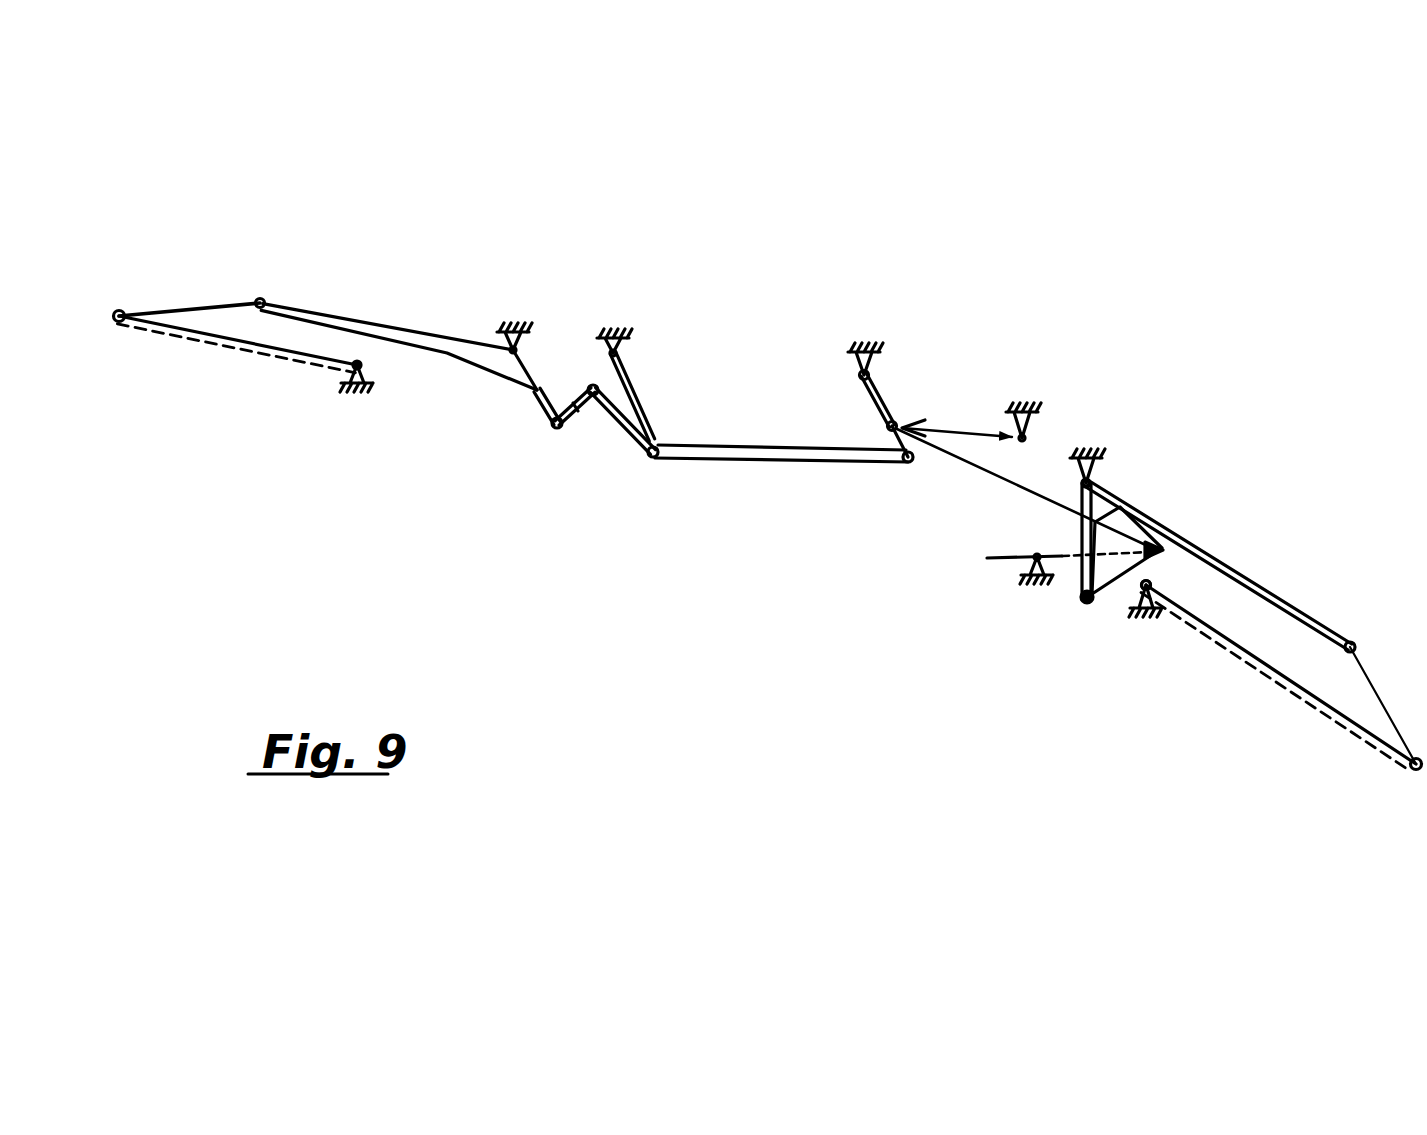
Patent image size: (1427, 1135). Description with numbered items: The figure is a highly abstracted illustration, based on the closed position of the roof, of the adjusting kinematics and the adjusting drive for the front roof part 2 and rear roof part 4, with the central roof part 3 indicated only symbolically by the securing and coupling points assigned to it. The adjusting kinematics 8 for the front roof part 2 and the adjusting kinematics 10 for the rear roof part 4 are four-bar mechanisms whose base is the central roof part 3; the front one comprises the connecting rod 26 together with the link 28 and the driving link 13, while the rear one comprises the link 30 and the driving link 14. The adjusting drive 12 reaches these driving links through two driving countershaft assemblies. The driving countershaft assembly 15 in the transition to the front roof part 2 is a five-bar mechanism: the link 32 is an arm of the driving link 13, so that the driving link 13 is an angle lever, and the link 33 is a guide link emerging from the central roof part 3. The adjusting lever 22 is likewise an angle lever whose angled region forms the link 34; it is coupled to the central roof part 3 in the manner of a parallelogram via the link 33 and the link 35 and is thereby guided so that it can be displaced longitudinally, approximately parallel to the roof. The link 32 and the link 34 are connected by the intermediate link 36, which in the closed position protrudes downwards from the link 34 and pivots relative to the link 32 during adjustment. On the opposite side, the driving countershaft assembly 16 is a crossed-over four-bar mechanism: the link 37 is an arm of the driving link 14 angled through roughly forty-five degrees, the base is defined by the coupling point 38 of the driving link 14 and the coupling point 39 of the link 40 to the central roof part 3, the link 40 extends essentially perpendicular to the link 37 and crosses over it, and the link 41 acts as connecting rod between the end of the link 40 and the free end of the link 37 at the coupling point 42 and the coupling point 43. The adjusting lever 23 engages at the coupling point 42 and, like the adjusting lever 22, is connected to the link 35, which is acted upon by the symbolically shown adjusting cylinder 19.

The front roof part 2 is at (170, 299).
The central roof part 3 is at (352, 390).
The rear roof part 4 is at (1426, 699).
The adjusting kinematics 8 is at (261, 388).
The adjusting kinematics 10 is at (1309, 582).
The adjusting drive 12 is at (781, 361).
The driving link 13 is at (331, 310).
The driving link 14 is at (1232, 572).
The driving countershaft assembly 15 is at (570, 306).
The driving countershaft assembly 16 is at (1141, 443).
The adjusting cylinder 19 is at (948, 425).
The adjusting lever 22 is at (757, 450).
The adjusting lever 23 is at (998, 481).
The connecting rod 26 is at (203, 303).
The link 28 is at (223, 342).
The link 30 is at (1275, 675).
The link 32 is at (545, 397).
The link 33 is at (631, 386).
The link 34 is at (628, 428).
The link 35 is at (880, 402).
The intermediate link 36 is at (585, 410).
The link 37 is at (1085, 532).
The coupling point 38 is at (1095, 488).
The coupling point 39 is at (988, 557).
The link 40 is at (1073, 560).
The link 41 is at (1152, 583).
The coupling point 42 is at (1178, 530).
The coupling point 43 is at (1092, 605).